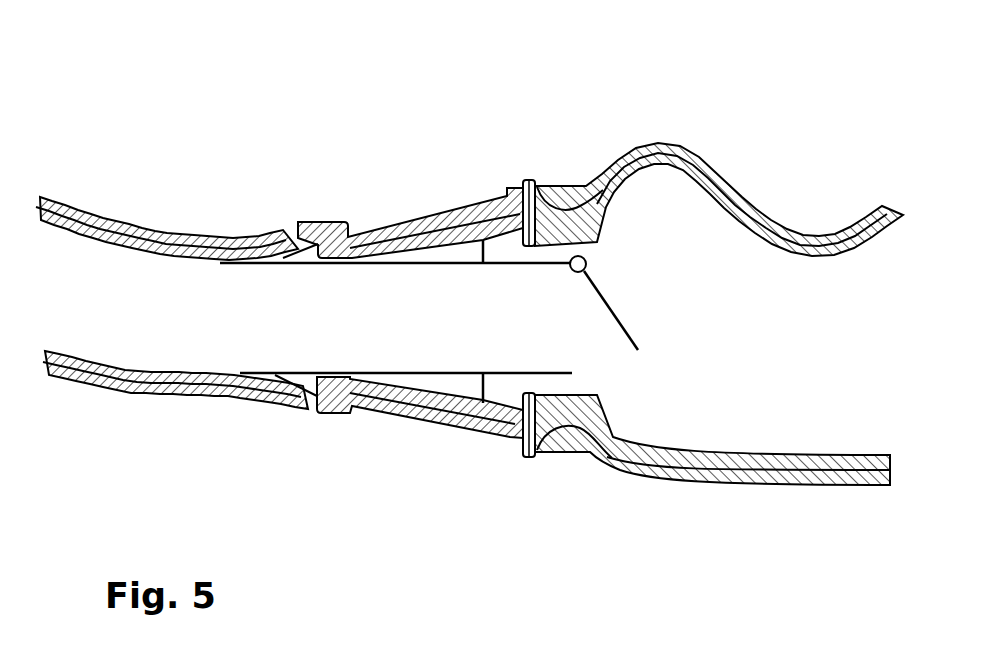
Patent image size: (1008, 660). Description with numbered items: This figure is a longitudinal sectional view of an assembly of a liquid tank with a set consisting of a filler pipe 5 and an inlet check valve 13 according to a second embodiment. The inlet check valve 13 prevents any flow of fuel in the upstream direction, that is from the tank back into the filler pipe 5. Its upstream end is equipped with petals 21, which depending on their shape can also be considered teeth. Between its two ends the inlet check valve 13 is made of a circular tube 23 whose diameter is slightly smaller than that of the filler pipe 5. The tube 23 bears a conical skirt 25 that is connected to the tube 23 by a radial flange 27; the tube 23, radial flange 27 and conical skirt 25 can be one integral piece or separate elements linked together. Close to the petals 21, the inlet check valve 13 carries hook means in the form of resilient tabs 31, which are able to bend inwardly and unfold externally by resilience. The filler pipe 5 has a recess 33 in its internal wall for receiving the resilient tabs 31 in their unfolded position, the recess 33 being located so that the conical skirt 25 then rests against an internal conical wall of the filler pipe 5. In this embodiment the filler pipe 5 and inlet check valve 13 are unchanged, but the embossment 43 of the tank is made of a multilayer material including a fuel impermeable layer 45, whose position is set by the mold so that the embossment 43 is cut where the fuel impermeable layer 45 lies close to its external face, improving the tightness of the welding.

The filler pipe 5 is at (410, 189).
The inlet check valve 13 is at (452, 255).
The petals 21 is at (240, 376).
The circular tube 23 is at (412, 379).
The conical skirt 25 is at (497, 250).
The radial flange 27 is at (483, 377).
The resilient tabs 31 is at (303, 405).
The recess 33 is at (282, 255).
The embossment 43 is at (713, 166).
The fuel impermeable layer 45 is at (748, 210).